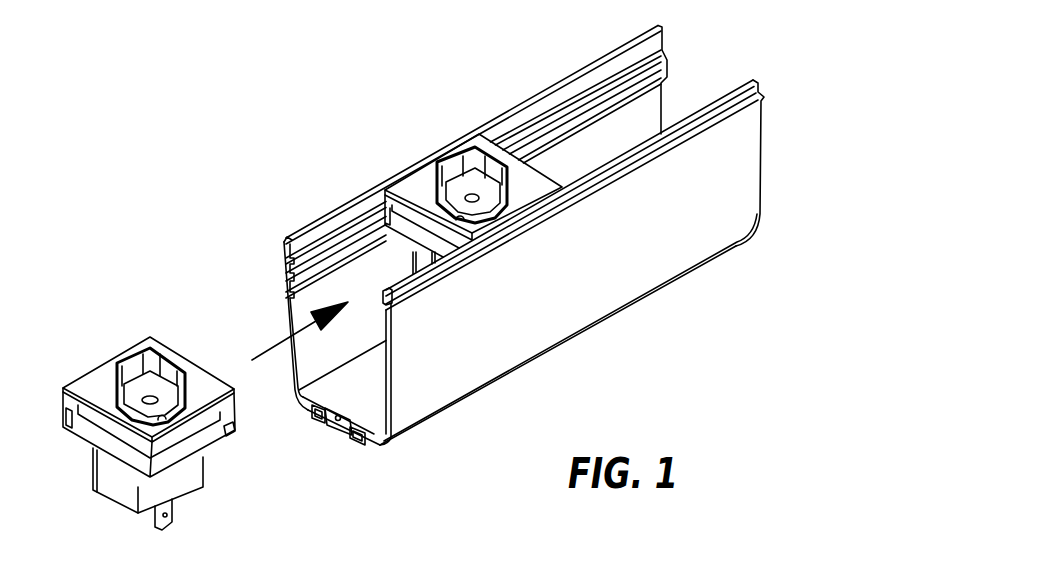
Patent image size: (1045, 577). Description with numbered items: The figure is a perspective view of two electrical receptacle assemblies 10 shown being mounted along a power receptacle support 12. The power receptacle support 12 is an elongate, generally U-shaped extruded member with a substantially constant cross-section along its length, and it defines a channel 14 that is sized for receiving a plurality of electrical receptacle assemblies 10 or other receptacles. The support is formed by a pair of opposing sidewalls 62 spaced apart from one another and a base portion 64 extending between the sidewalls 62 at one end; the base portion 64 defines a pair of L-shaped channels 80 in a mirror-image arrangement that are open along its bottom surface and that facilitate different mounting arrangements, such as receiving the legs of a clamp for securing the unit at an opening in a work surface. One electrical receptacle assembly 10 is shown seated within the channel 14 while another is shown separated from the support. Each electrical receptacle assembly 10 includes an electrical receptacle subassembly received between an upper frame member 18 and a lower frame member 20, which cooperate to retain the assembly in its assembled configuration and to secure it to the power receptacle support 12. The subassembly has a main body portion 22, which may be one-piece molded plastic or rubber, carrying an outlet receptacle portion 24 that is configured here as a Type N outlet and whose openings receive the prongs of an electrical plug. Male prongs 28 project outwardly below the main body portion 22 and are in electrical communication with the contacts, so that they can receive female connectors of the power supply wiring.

The electrical receptacle assembly 10 is at (565, 161).
The power receptacle support 12 is at (313, 226).
The channel 14 is at (703, 79).
The upper frame member 18 is at (410, 182).
The lower frame member 20 is at (432, 248).
The main body portion 22 is at (420, 262).
The outlet receptacle portion 24 is at (457, 169).
The male prong 28 is at (174, 516).
The sidewall 62 is at (284, 285).
The base portion 64 is at (334, 428).
The L-shaped channel 80 is at (316, 427).